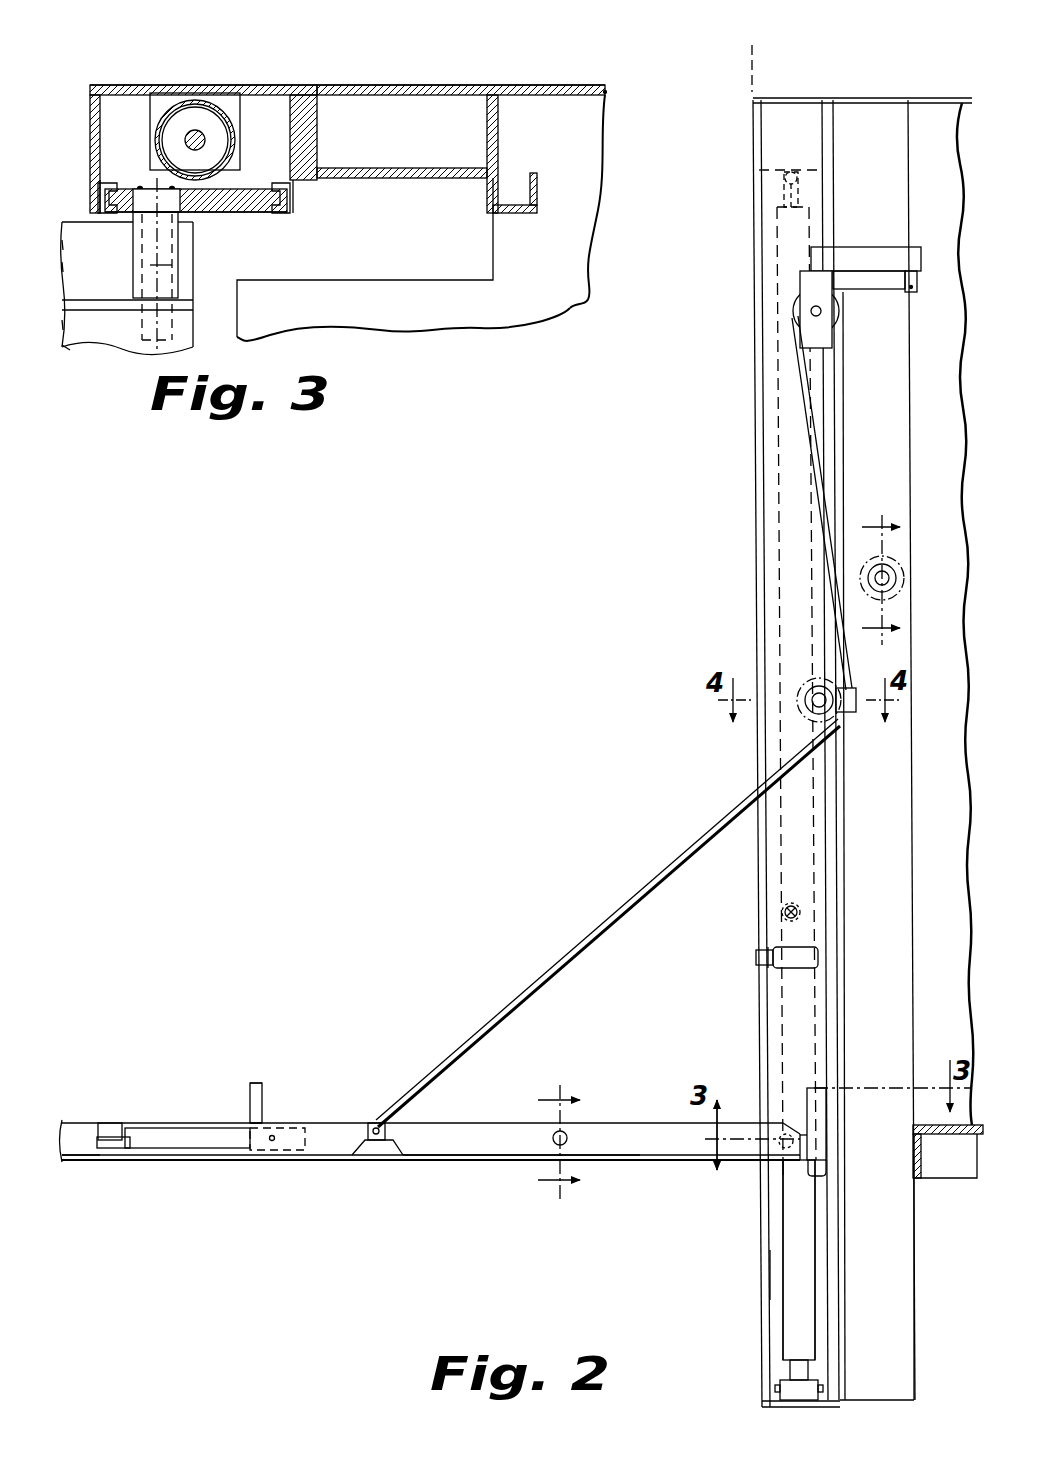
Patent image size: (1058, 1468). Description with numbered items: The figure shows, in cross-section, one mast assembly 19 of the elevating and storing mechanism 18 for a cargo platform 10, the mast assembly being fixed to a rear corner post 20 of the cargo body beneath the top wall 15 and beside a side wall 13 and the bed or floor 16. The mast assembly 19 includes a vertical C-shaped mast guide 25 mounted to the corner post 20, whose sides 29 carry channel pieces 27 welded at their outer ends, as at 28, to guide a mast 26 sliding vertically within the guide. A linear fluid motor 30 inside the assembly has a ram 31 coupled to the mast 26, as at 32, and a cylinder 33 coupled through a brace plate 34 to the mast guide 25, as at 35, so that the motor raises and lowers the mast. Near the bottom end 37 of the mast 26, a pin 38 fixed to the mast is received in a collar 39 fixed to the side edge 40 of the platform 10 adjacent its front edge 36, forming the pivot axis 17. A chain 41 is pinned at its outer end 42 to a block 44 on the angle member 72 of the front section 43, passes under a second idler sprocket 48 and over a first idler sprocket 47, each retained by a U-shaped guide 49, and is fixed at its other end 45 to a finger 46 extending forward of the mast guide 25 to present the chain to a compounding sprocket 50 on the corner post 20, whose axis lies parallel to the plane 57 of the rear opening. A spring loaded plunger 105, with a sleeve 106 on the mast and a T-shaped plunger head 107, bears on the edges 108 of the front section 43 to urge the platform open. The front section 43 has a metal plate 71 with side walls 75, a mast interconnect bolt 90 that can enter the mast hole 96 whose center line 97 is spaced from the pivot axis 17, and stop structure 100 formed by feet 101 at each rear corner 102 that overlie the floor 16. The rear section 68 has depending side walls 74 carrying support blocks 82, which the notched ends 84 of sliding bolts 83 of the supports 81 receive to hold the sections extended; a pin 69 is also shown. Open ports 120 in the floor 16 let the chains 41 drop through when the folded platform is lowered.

In FIG. 3, the cargo platform 10 is at (77, 396).
In FIG. 2, the cargo platform 10 is at (372, 1175).
In FIG. 3, the side wall 13 is at (606, 91).
In FIG. 2, the top wall 15 is at (944, 102).
In FIG. 3, the bed or floor 16 is at (575, 262).
In FIG. 2, the bed or floor 16 is at (955, 1120).
In FIG. 3, the pivot axis 17 is at (155, 355).
In FIG. 2, the pivot axis 17 is at (785, 1163).
In FIG. 3, the elevating and storing mechanism 18 is at (277, 81).
In FIG. 2, the elevating and storing mechanism 18 is at (750, 1255).
In FIG. 3, the mast assembly 19 is at (281, 228).
In FIG. 2, the mast assembly 19 is at (778, 853).
In FIG. 3, the rear corner post 20 is at (417, 90).
In FIG. 2, the rear corner post 20 is at (910, 918).
In FIG. 3, the mast guide 25 is at (112, 87).
In FIG. 2, the mast guide 25 is at (758, 744).
In FIG. 3, the mast 26 is at (242, 213).
In FIG. 2, the mast 26 is at (770, 460).
In FIG. 3, the channel piece 27 is at (103, 186).
In FIG. 2, the channel piece 27 is at (748, 139).
In FIG. 3, the weld location 28 is at (96, 210).
In FIG. 3, the mast guide side 29 is at (92, 120).
In FIG. 3, the linear fluid motor 30 is at (222, 104).
In FIG. 2, the linear fluid motor 30 is at (777, 590).
In FIG. 3, the ram 31 is at (198, 140).
In FIG. 2, the ram 31 is at (775, 200).
In FIG. 2, the ram coupling 32 is at (810, 150).
In FIG. 3, the cylinder 33 is at (163, 150).
In FIG. 2, the cylinder 33 is at (805, 1212).
In FIG. 3, the brace plate 34 is at (158, 100).
In FIG. 2, the brace plate 34 is at (798, 1400).
In FIG. 2, the cylinder coupling 35 is at (775, 1390).
In FIG. 3, the front edge 36 is at (193, 334).
In FIG. 2, the front edge 36 is at (795, 1137).
In FIG. 2, the bottom end 37 is at (826, 1168).
In FIG. 3, the pin 38 is at (172, 265).
In FIG. 2, the pin 38 is at (790, 1134).
In FIG. 3, the collar 39 is at (133, 290).
In FIG. 3, the side edge 40 is at (88, 302).
In FIG. 2, the side edge 40 is at (643, 1146).
In FIG. 2, the chain 41 is at (865, 315).
In FIG. 2, the chain outer end 42 is at (376, 1122).
In FIG. 3, the front section 43 is at (104, 355).
In FIG. 2, the front section 43 is at (590, 1122).
In FIG. 2, the block 44 is at (390, 1140).
In FIG. 2, the chain other end 45 is at (906, 291).
In FIG. 2, the finger 46 is at (918, 276).
In FIG. 2, the first idler sprocket 47 is at (797, 319).
In FIG. 2, the second idler sprocket 48 is at (840, 714).
In FIG. 2, the U-shaped guide 49 is at (798, 368).
In FIG. 2, the compounding sprocket 50 is at (900, 582).
In FIG. 2, the plane of rear opening 57 is at (750, 68).
In FIG. 2, the rear section 68 is at (68, 1122).
In FIG. 2, the pin 69 is at (271, 1142).
In FIG. 3, the metal plate 71 is at (104, 325).
In FIG. 3, the angle member 72 is at (91, 245).
In FIG. 2, the angle member 72 is at (492, 1143).
In FIG. 2, the rear section side wall 74 is at (70, 1162).
In FIG. 2, the front section side wall 75 is at (442, 1145).
In FIG. 2, the support 81 is at (195, 1175).
In FIG. 2, the support block 82 is at (118, 1125).
In FIG. 2, the bolt 83 is at (170, 1136).
In FIG. 2, the notched end 84 is at (123, 1149).
In FIG. 2, the mast interconnect bolt 90 is at (551, 1138).
In FIG. 2, the mast hole 96 is at (782, 912).
In FIG. 2, the center line of mast hole 97 is at (796, 908).
In FIG. 2, the stop structure 100 is at (276, 1060).
In FIG. 2, the foot 101 is at (262, 1093).
In FIG. 2, the rear corner 102 is at (250, 1120).
In FIG. 2, the spring loaded plunger 105 is at (752, 975).
In FIG. 2, the sleeve 106 is at (808, 968).
In FIG. 2, the T-shaped plunger head 107 is at (756, 958).
In FIG. 3, the edge of front section 108 is at (94, 267).
In FIG. 2, the edge of front section 108 is at (610, 1150).
In FIG. 3, the open port 120 is at (408, 278).
In FIG. 2, the open port 120 is at (896, 1150).